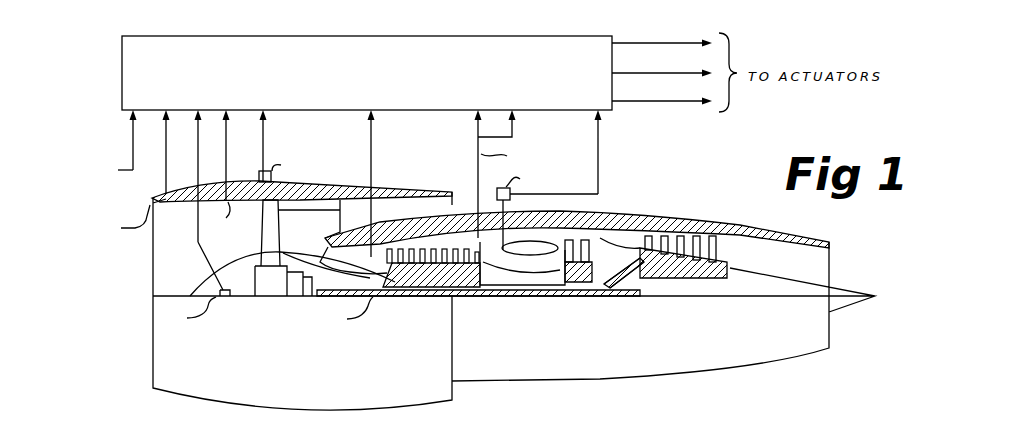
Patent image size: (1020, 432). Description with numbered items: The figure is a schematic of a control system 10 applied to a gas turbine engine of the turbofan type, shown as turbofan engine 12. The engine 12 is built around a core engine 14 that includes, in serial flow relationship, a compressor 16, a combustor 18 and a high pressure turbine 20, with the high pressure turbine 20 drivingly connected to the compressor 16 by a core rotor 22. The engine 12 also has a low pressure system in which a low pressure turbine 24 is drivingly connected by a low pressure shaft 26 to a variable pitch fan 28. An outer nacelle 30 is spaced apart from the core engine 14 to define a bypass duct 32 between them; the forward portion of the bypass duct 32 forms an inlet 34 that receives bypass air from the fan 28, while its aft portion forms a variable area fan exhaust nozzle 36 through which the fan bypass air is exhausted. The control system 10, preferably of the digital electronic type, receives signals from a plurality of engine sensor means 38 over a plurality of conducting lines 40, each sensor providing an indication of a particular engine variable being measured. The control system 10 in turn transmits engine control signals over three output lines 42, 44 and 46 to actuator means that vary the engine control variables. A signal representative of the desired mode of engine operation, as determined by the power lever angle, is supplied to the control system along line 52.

The control system 10 is at (116, 57).
The turbofan engine 12 is at (114, 262).
The core engine 14 is at (419, 225).
The compressor 16 is at (410, 258).
The combustor 18 is at (536, 255).
The high pressure turbine 20 is at (579, 262).
The core rotor 22 is at (498, 287).
The low pressure turbine 24 is at (680, 250).
The low pressure shaft 26 is at (623, 282).
The variable pitch fan 28 is at (262, 227).
The outer nacelle 30 is at (210, 195).
The bypass duct 32 is at (393, 203).
The inlet 34 is at (320, 217).
The variable area fan exhaust nozzle 36 is at (460, 200).
The engine sensor means 38 is at (187, 179).
The lines 40 is at (622, 143).
The output line 42 is at (662, 33).
The output line 44 is at (662, 65).
The output line 46 is at (662, 94).
The line 52 is at (134, 167).